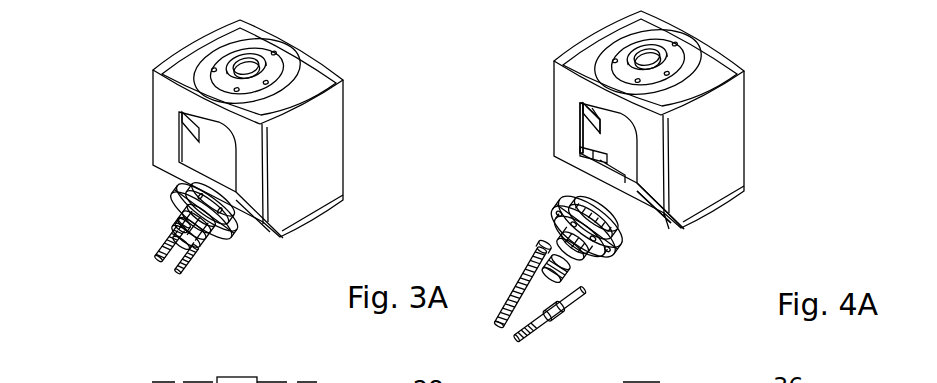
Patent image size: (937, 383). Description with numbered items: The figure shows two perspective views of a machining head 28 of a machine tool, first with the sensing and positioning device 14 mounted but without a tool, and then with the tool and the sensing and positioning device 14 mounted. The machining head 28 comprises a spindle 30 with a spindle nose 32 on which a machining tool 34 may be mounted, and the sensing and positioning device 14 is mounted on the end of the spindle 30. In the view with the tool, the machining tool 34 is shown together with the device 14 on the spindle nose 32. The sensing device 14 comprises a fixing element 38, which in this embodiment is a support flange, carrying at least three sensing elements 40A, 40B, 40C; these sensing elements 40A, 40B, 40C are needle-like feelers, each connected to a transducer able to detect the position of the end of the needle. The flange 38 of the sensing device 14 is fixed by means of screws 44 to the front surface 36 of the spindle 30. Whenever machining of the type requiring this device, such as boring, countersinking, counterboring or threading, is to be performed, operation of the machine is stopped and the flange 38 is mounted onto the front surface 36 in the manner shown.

In FIG. 3A, the sensing and positioning device 14 is at (245, 257).
In FIG. 4A, the sensing and positioning device 14 is at (602, 300).
In FIG. 3A, the machining head 28 is at (372, 127).
In FIG. 4A, the machining head 28 is at (775, 127).
In FIG. 4A, the spindle 30 is at (645, 232).
In FIG. 3A, the spindle nose 32 is at (225, 228).
In FIG. 4A, the spindle nose 32 is at (588, 183).
In FIG. 4A, the machining tool 34 is at (540, 278).
In FIG. 4A, the front surface 36 is at (588, 178).
In FIG. 3A, the fixing element 38 is at (178, 195).
In FIG. 4A, the fixing element 38 is at (553, 205).
In FIG. 3A, the sensing element 40A is at (167, 227).
In FIG. 4A, the sensing element 40A is at (513, 285).
In FIG. 3A, the sensing element 40B is at (157, 258).
In FIG. 4A, the sensing element 40B is at (497, 327).
In FIG. 3A, the sensing element 40C is at (180, 270).
In FIG. 4A, the sensing element 40C is at (543, 322).
In FIG. 4A, the screws 44 is at (597, 263).